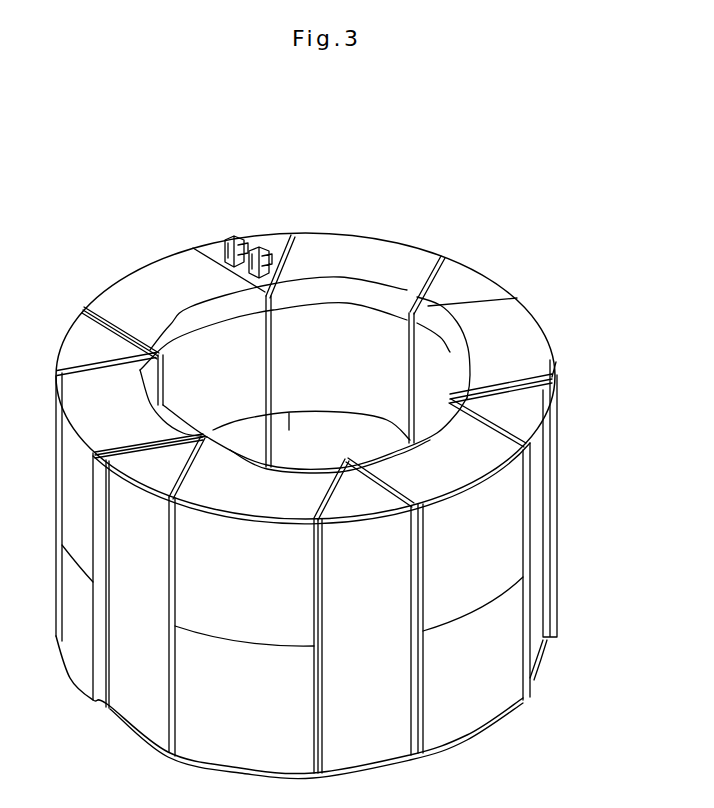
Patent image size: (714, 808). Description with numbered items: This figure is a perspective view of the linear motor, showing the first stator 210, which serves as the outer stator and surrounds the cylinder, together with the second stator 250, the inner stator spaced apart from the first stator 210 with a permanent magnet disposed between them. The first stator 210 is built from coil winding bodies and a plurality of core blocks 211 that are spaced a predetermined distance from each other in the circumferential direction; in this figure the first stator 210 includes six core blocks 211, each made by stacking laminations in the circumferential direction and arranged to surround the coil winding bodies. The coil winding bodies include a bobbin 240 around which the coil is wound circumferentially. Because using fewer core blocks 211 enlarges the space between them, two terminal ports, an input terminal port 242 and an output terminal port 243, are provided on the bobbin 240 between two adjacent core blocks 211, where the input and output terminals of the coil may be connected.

The first stator 210 is at (102, 208).
The core block 211 is at (378, 250).
The bobbin 240 is at (459, 290).
The input terminal port 242 is at (229, 236).
The output terminal port 243 is at (263, 253).
The second stator 250 is at (405, 403).